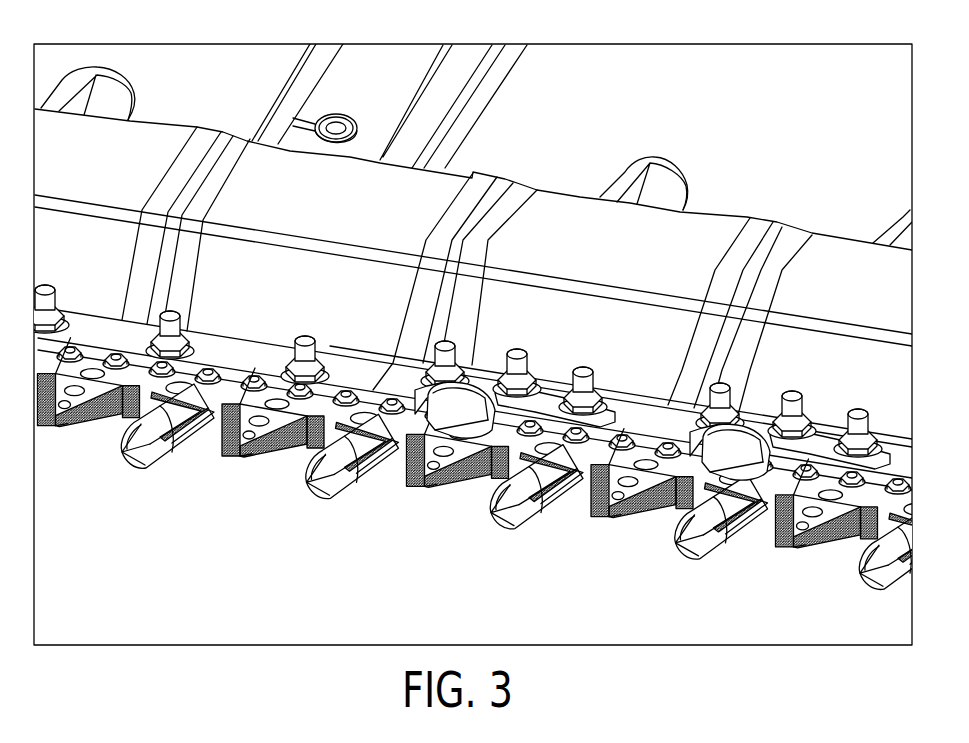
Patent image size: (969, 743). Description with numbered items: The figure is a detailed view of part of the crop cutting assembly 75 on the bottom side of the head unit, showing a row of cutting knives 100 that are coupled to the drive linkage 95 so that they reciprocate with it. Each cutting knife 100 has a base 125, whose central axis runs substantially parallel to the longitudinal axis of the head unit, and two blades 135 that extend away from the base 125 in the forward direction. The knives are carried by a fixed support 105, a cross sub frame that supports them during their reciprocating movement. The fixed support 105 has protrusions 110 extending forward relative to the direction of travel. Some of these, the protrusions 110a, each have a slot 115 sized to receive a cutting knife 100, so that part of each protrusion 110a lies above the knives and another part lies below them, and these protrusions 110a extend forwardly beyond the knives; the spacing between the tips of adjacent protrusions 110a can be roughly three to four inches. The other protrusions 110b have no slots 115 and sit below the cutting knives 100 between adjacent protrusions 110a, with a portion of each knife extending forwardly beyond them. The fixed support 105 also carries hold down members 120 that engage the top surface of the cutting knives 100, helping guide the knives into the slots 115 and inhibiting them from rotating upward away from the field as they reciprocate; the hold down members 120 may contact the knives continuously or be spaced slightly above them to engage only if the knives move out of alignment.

The crop cutting assembly 75 is at (736, 157).
The drive linkage 95 is at (877, 490).
The cutting knives 100 is at (298, 556).
The fixed support 105 is at (548, 204).
The protrusions 110 is at (421, 560).
The slotted protrusions 110a is at (493, 507).
The unslotted protrusions 110b is at (648, 510).
The slot 115 is at (143, 440).
The hold down members 120 is at (467, 397).
The base 125 is at (137, 360).
The blades 135 is at (38, 427).